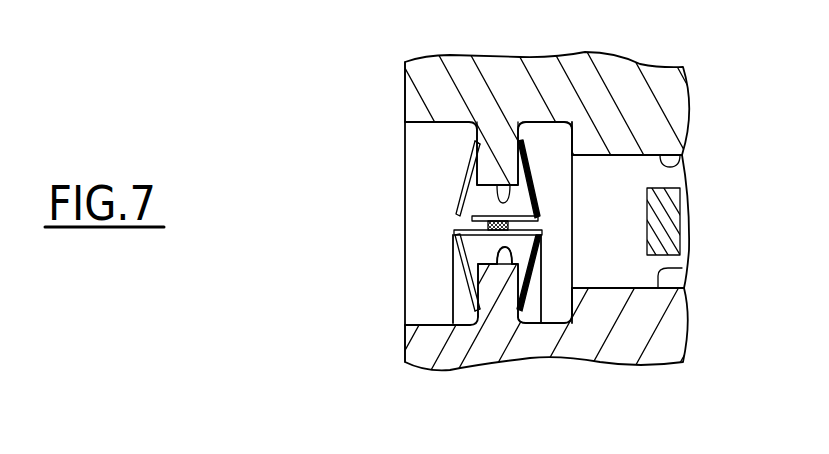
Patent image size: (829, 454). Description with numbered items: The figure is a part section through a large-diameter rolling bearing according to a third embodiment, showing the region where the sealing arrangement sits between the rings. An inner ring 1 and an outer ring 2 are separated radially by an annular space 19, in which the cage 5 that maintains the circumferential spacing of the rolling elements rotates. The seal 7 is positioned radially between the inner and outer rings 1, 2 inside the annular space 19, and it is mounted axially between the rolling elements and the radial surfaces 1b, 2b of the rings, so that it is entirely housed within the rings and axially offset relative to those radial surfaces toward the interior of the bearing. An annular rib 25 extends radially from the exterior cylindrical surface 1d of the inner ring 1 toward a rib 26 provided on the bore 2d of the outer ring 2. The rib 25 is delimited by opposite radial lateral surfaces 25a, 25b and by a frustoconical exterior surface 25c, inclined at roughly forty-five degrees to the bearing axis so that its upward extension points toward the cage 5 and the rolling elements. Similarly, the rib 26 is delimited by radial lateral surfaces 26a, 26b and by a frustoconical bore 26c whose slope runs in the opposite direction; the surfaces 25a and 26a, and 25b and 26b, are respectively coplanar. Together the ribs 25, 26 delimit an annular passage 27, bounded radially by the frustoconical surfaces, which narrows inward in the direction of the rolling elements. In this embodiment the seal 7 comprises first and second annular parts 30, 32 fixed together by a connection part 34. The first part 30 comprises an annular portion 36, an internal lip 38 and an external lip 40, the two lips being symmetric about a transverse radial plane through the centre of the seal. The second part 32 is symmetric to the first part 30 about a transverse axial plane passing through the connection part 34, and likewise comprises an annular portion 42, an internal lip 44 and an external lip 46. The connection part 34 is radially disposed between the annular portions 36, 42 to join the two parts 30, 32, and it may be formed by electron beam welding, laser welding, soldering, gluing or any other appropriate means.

The inner ring 1 is at (668, 311).
The radial surface of the inner ring 1b is at (405, 362).
The exterior cylindrical surface of the inner ring 1d is at (682, 268).
The outer ring 2 is at (668, 102).
The radial surface of the outer ring 2b is at (405, 73).
The bore of the outer ring 2d is at (655, 152).
The cage 5 is at (680, 220).
The seal 7 is at (514, 224).
The annular space 19 is at (628, 183).
The annular rib 25 is at (497, 293).
The radial lateral surface of the rib 25a is at (527, 295).
The radial lateral surface of the rib 25b is at (470, 289).
The frustoconical exterior surface 25c is at (506, 264).
The annular rib 26 is at (497, 147).
The radial lateral surface of the rib 26a is at (525, 153).
The radial lateral surface of the rib 26b is at (468, 153).
The frustoconical bore 26c is at (510, 185).
The annular passage 27 is at (490, 253).
The first annular part 30 is at (438, 124).
The second annular part 32 is at (437, 331).
The connection part 34 is at (453, 235).
The annular portion 36 is at (472, 218).
The internal lip 38 is at (577, 156).
The external lip 40 is at (476, 141).
The annular portion 42 is at (545, 238).
The internal lip 44 is at (567, 302).
The external lip 46 is at (475, 280).